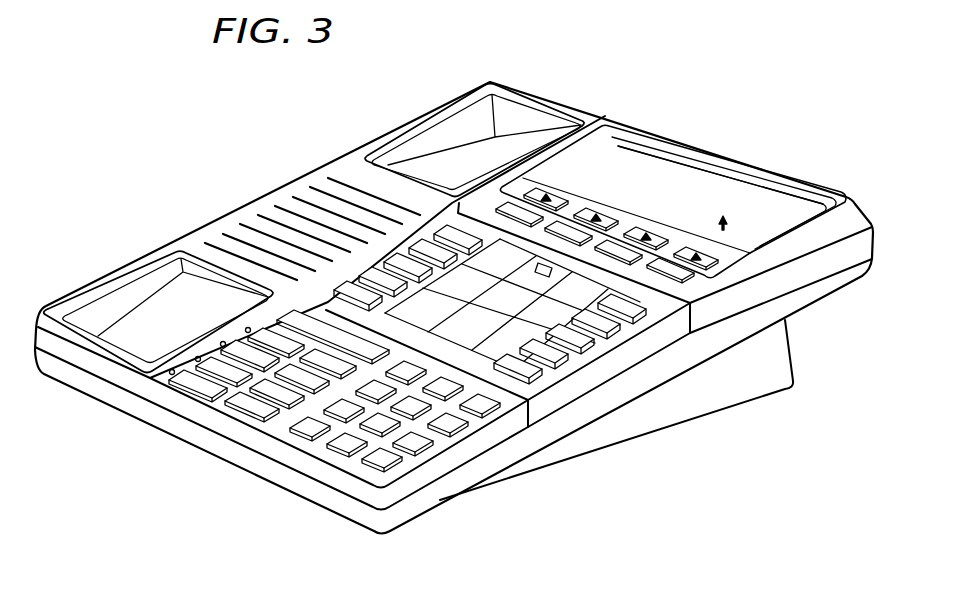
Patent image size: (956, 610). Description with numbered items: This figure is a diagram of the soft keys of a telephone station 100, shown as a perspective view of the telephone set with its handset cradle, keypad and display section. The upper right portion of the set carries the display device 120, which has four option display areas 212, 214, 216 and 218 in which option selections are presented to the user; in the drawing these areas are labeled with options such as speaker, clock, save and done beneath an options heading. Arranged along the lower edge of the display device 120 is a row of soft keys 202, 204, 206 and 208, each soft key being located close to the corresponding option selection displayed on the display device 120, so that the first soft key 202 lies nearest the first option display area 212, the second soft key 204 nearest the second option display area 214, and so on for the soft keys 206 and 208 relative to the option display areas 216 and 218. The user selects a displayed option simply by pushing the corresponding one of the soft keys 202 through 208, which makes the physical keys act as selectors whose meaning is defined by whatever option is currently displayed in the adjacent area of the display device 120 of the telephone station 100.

The telephone station 100 is at (297, 104).
The display device 120 is at (708, 168).
The soft key 202 is at (527, 187).
The soft key 204 is at (612, 211).
The soft key 206 is at (659, 236).
The soft key 208 is at (716, 275).
The option display area 212 is at (600, 158).
The option display area 214 is at (650, 173).
The option display area 216 is at (712, 203).
The option display area 218 is at (762, 223).